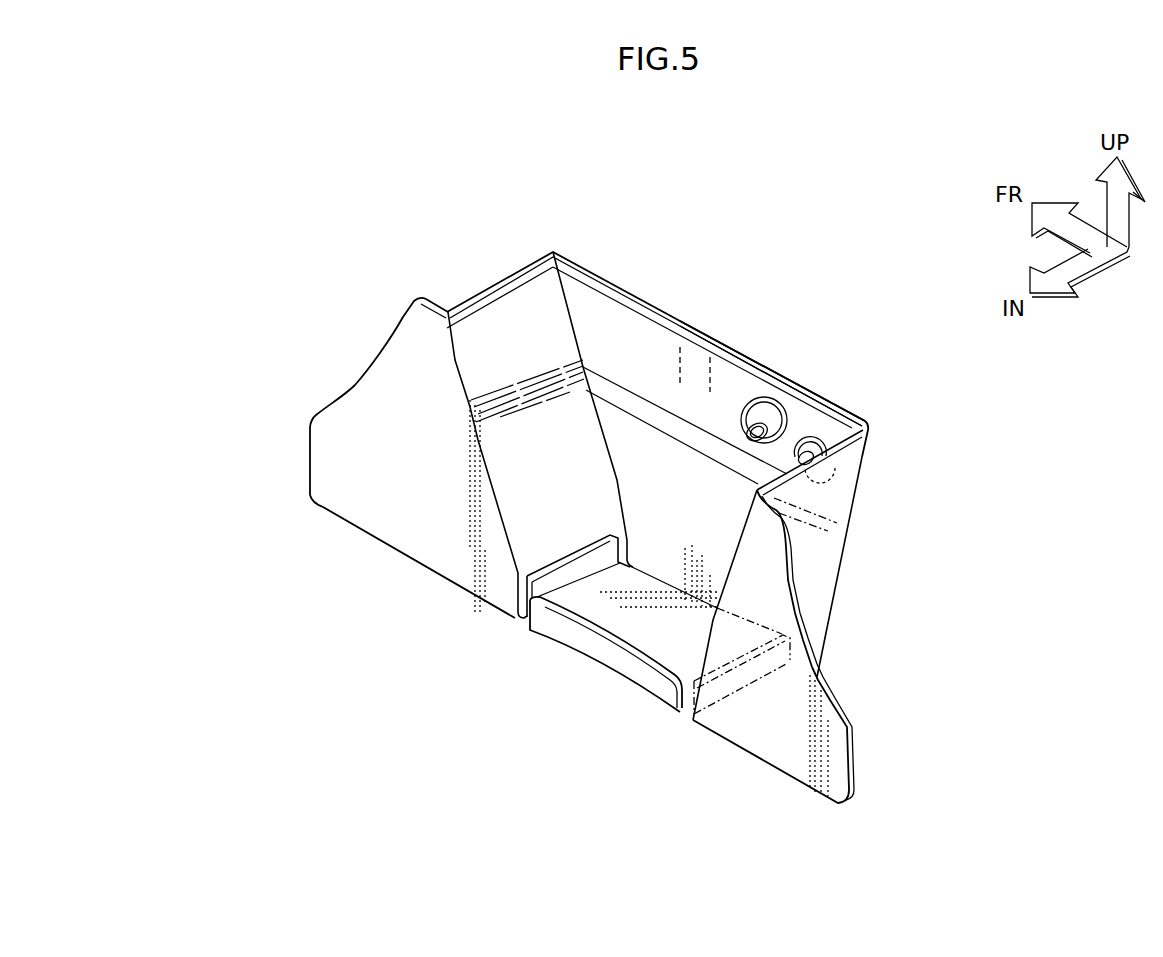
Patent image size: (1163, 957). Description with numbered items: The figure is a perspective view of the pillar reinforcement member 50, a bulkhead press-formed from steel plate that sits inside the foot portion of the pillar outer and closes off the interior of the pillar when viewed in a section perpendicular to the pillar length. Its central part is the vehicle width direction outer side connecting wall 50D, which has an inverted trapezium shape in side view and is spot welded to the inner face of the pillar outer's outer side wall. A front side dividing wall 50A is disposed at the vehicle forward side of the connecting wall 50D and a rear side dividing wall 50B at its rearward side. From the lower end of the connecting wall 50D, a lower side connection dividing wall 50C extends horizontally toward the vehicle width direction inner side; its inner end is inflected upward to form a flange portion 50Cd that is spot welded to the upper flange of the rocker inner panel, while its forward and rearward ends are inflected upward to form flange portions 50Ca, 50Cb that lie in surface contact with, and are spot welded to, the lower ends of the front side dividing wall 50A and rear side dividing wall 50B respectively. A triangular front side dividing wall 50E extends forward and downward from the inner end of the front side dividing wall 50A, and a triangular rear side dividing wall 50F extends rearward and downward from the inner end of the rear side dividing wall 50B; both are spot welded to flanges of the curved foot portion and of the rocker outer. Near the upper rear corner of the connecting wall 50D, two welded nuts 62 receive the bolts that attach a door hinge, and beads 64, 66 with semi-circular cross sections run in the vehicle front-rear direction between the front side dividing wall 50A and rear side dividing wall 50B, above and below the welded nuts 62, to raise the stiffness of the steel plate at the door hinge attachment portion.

The pillar reinforcement member 50 is at (606, 200).
The front side dividing wall 50A is at (500, 343).
The rear side dividing wall 50B is at (807, 547).
The lower side connection dividing wall 50C is at (673, 638).
The flange portion 50Ca is at (568, 577).
The flange portion 50Cb is at (737, 677).
The flange portion 50Cd is at (608, 660).
The vehicle width direction outer side connecting wall 50D is at (640, 347).
The triangular front side dividing wall 50E is at (333, 460).
The triangular rear side dividing wall 50F is at (810, 768).
The welded nuts 62 is at (757, 396).
The bead 64 is at (762, 373).
The bead 66 is at (668, 420).